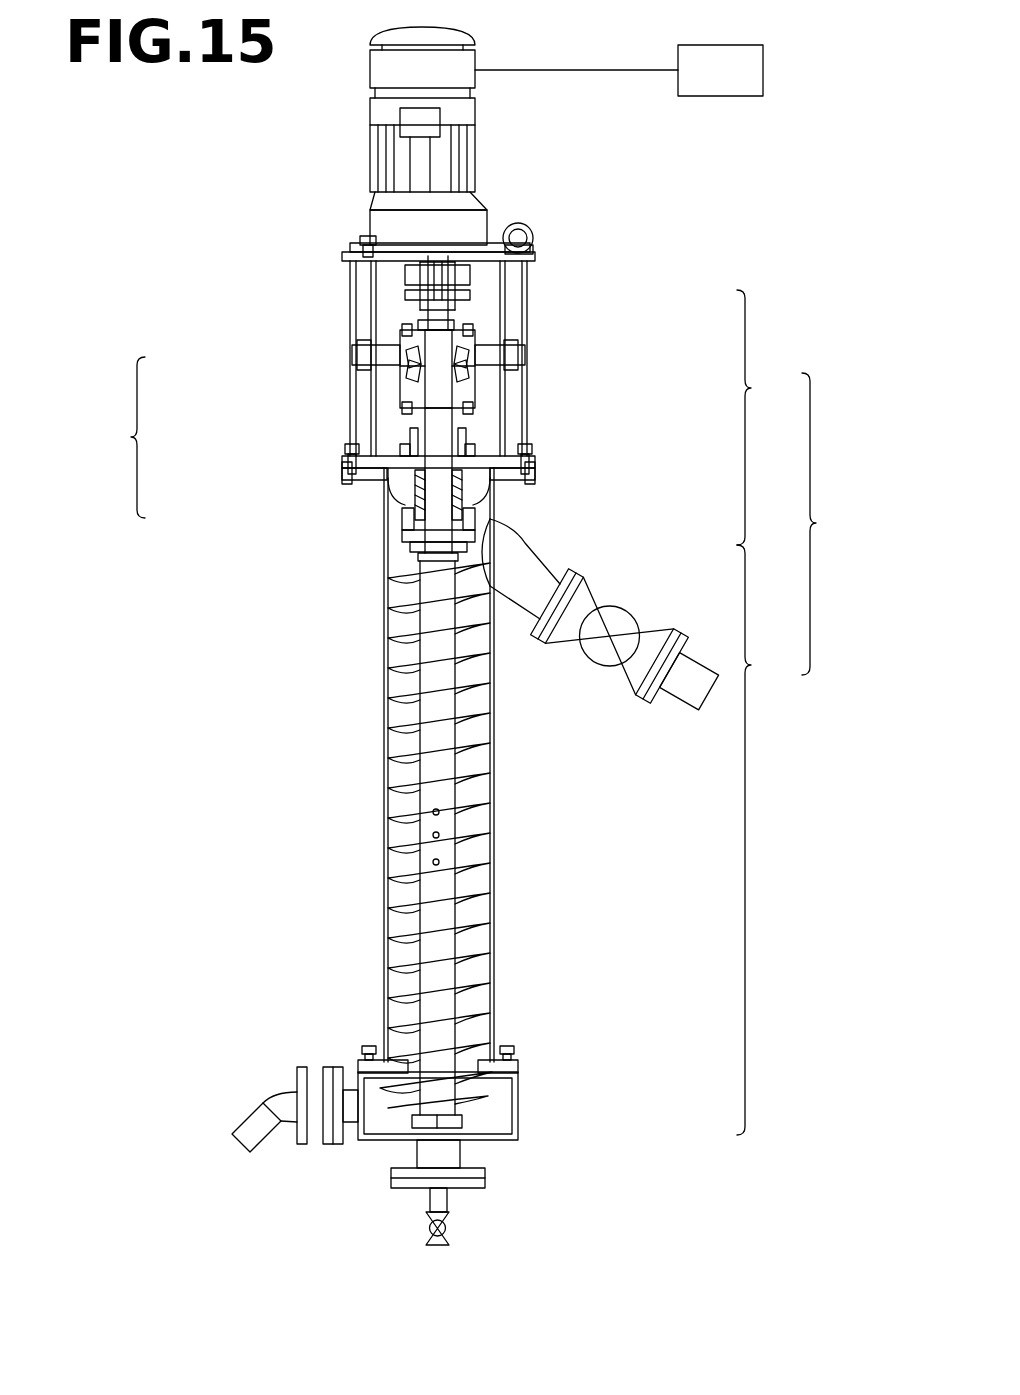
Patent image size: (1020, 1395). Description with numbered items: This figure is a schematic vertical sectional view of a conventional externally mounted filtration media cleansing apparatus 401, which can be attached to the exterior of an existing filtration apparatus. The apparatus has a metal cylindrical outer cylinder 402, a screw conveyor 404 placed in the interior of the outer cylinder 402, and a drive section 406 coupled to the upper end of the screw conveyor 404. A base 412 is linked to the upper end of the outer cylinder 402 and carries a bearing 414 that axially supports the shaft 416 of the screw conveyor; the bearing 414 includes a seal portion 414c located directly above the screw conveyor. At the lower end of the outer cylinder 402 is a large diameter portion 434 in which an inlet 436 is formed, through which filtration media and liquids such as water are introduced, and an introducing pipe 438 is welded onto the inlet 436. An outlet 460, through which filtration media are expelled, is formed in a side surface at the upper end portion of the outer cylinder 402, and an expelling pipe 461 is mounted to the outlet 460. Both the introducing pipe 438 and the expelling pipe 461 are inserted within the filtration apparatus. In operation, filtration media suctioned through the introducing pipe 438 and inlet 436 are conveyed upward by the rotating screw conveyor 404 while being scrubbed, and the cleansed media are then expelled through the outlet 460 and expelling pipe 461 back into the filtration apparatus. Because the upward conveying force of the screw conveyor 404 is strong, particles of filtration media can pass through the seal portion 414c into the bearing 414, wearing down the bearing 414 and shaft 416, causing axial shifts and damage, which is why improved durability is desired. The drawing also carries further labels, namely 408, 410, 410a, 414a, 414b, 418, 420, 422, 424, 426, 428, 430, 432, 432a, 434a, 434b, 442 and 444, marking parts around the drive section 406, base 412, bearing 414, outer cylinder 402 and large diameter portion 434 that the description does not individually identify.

The filtration media cleansing apparatus 401 is at (776, 194).
The outer cylinder 402 is at (497, 778).
The screw conveyor 404 is at (412, 678).
The drive section 406 is at (330, 130).
The flange 408 is at (358, 490).
The mounting plate 410 is at (530, 462).
The bolt 410a is at (350, 448).
The base 412 is at (533, 304).
The bearing 414 is at (115, 437).
The lower bearing 414a is at (405, 526).
The upper bearing 414b is at (400, 384).
The seal portion 414c is at (415, 545).
The shaft 416 is at (840, 524).
The screw shaft 418 is at (386, 780).
The tube section 420 is at (774, 840).
The drive section 422 is at (774, 417).
The coupling 424 is at (398, 289).
The speed reducer 426 is at (497, 216).
The motor body 428 is at (482, 146).
The controller 430 is at (742, 47).
The flange 432 is at (497, 1058).
The bolt 432a is at (368, 1048).
The large diameter portion 434 is at (522, 1100).
The side outlet port 434a is at (356, 1088).
The bottom outlet port 434b is at (508, 1140).
The inlet 436 is at (343, 1108).
The introducing pipe 438 is at (235, 1122).
The valve 442 is at (436, 1140).
The flange 444 is at (455, 1148).
The outlet 460 is at (490, 562).
The expelling pipe 461 is at (545, 552).